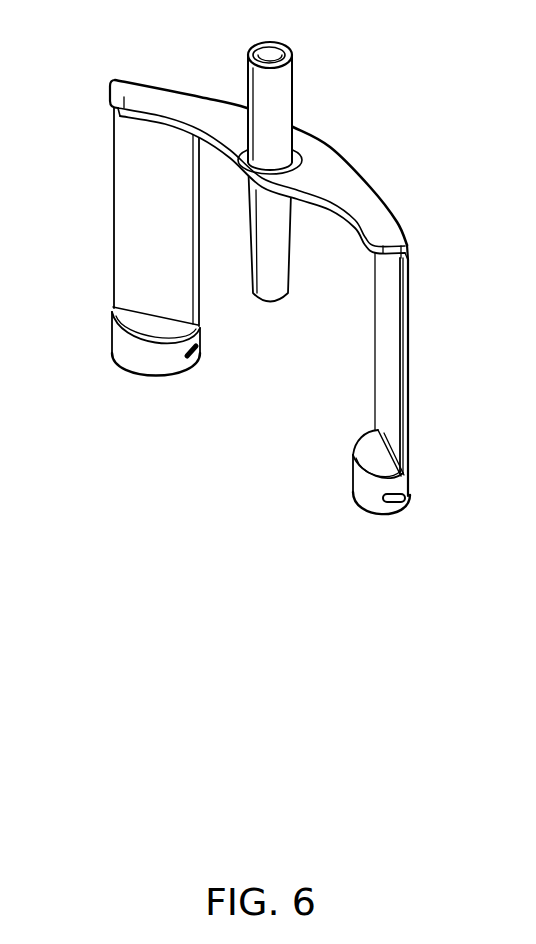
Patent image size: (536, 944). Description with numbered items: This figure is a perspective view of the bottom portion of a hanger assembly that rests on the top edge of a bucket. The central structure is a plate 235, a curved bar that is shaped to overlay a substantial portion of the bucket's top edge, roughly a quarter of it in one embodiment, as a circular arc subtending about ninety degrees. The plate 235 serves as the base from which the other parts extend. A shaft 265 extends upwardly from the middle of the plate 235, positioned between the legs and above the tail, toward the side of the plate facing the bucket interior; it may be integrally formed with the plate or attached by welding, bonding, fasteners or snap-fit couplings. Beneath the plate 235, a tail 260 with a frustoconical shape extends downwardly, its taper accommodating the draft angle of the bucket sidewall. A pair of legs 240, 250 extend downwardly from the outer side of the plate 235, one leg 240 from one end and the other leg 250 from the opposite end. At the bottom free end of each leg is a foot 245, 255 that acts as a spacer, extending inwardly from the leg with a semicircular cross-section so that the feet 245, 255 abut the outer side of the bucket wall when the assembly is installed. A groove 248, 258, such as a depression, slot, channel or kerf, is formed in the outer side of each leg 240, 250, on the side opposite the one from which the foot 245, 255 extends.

The plate 235 is at (355, 198).
The leg 240 is at (112, 203).
The foot 245 is at (143, 357).
The groove 248 is at (193, 352).
The leg 250 is at (408, 353).
The foot 255 is at (350, 475).
The groove 258 is at (397, 507).
The tail 260 is at (273, 235).
The shaft 265 is at (293, 88).